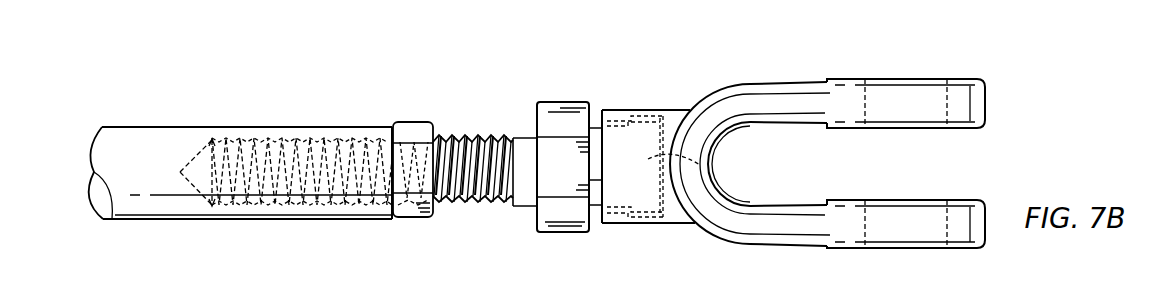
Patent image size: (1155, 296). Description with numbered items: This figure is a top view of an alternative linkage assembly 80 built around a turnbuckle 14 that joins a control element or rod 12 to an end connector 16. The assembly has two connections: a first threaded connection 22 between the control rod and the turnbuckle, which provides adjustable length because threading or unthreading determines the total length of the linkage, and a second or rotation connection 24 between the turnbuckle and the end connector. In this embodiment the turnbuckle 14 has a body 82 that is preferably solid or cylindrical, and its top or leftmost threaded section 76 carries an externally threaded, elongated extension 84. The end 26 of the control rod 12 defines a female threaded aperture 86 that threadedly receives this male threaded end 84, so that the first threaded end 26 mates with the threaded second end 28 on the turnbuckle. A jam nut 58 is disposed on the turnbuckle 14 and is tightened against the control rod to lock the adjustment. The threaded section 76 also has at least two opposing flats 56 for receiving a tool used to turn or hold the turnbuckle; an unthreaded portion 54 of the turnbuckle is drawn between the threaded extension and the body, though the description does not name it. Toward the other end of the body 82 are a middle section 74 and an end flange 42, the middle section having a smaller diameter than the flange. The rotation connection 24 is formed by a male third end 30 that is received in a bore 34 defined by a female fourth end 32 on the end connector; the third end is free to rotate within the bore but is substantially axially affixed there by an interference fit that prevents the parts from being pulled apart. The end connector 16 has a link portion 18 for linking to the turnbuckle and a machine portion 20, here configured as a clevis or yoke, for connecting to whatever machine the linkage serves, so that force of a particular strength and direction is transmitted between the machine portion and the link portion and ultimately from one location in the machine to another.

The control element 12 is at (153, 127).
The first threaded end 26 is at (345, 127).
The threaded second end 28 is at (297, 192).
The female threaded aperture 86 is at (245, 142).
The first threaded connection 22 is at (448, 159).
The jam nut 58 is at (415, 218).
The externally threaded, elongated extension 84 is at (430, 134).
The shank 54 is at (546, 148).
The turnbuckle 14 is at (538, 161).
The body 82 is at (548, 120).
The opposing flats 56 is at (576, 178).
The threaded section 76 is at (553, 232).
The rotation connection 24 is at (598, 95).
The link portion 18 is at (664, 167).
The female fourth end 32 is at (608, 223).
The end flange 42 is at (660, 117).
The middle section 74 is at (627, 223).
The bore 34 is at (668, 223).
The male third end 30 is at (705, 167).
The end connector 16 is at (827, 129).
The machine portion 20 is at (796, 110).
The linkage assembly 80 is at (837, 63).